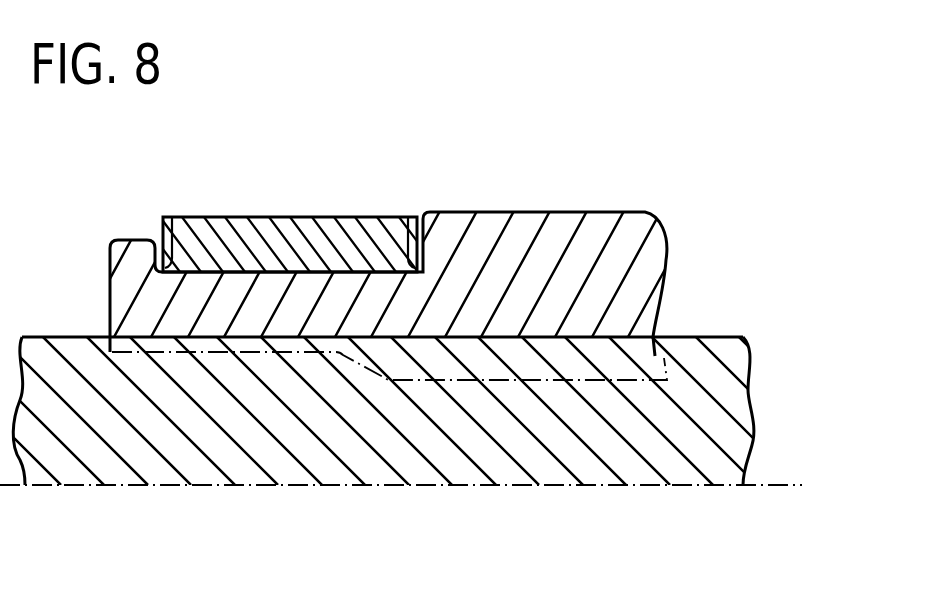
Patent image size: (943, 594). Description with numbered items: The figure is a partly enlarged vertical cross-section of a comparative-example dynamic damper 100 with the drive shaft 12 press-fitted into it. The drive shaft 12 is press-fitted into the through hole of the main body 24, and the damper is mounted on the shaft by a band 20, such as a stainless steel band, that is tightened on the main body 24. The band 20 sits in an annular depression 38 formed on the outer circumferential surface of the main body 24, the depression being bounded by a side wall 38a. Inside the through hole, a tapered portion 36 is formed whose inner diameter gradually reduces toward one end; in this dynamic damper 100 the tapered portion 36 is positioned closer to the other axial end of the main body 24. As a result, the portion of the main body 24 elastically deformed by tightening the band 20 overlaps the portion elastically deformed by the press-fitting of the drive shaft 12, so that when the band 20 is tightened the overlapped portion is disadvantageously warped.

The drive shaft 12 is at (708, 418).
The band 20 is at (268, 250).
The main body 24 is at (640, 277).
The tapered portion 36 is at (352, 362).
The annular depression 38 is at (172, 250).
The side wall 38a is at (408, 247).
The dynamic damper 100 is at (409, 254).